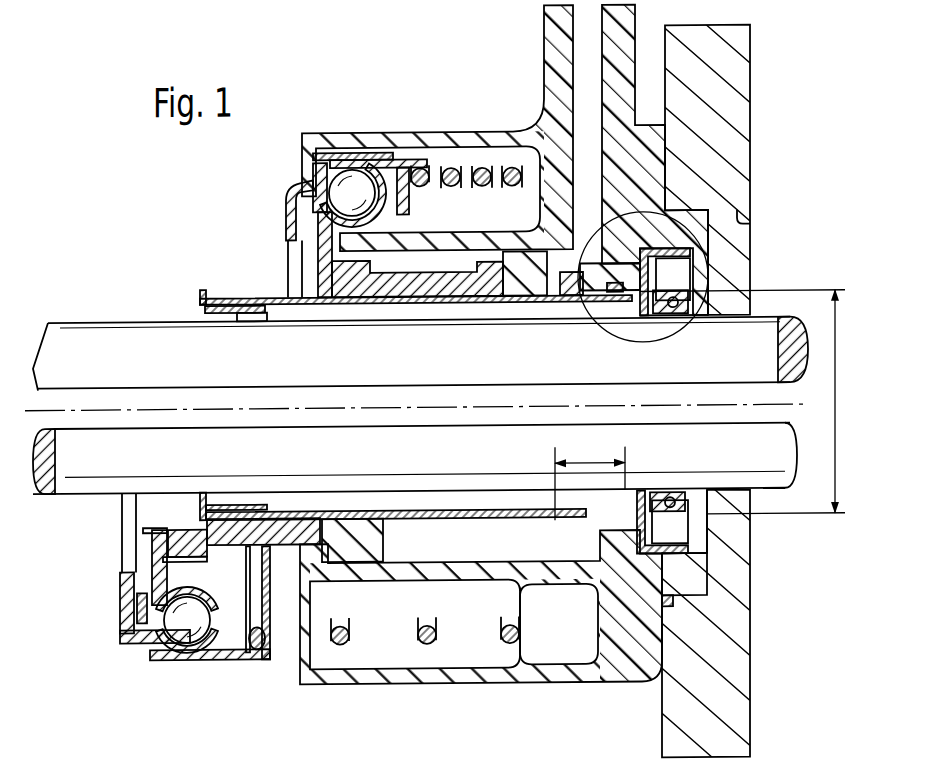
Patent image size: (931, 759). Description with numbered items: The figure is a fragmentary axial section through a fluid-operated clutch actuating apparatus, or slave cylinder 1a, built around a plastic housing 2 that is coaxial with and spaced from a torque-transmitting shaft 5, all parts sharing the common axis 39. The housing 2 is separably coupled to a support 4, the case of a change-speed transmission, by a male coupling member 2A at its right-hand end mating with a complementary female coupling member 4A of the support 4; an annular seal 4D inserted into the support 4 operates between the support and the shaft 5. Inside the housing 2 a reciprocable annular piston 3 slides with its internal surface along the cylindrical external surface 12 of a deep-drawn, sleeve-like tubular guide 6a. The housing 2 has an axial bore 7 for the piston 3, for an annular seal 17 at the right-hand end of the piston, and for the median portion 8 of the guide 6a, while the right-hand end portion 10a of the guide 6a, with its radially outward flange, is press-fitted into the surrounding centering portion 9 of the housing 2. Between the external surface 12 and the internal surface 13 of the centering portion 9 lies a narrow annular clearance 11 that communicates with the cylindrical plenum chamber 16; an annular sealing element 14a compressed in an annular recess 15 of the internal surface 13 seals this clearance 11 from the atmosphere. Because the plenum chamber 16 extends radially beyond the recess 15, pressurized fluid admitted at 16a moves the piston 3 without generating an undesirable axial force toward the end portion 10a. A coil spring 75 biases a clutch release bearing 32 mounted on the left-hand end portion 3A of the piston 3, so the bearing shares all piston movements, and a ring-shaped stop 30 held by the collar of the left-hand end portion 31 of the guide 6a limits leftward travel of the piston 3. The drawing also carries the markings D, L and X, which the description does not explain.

The slave cylinder 1a is at (450, 111).
The housing 2 is at (543, 53).
The male coupling member 2A is at (700, 586).
The annular piston 3 is at (395, 297).
The left-hand end portion of the piston 3A is at (187, 526).
The support 4 is at (752, 126).
The female coupling member 4A is at (742, 224).
The annular seal 4D is at (707, 550).
The shaft 5 is at (93, 363).
The tubular sleeve-like guide 6a is at (306, 303).
The axial bore 7 is at (462, 562).
The median portion of the guide 8 is at (516, 297).
The centering portion 9 is at (560, 565).
The right-hand end portion of the guide 10a is at (608, 683).
The annular clearance 11 is at (580, 293).
The cylindrical external surface 12 is at (400, 539).
The internal surface 13 is at (580, 293).
The annular sealing element 14a is at (575, 520).
The annular recess 15 is at (517, 587).
The plenum chamber 16 is at (435, 544).
The fluid inlet 16a is at (582, 83).
The annular seal 17 is at (492, 297).
The stop 30 is at (238, 313).
The left-hand end portion of the guide 31 is at (210, 297).
The clutch release bearing 32 is at (292, 196).
The common axis 39 is at (198, 415).
The coil spring 75 is at (428, 646).
The diameter D is at (742, 402).
The length L is at (590, 479).
The detail circle X is at (683, 335).